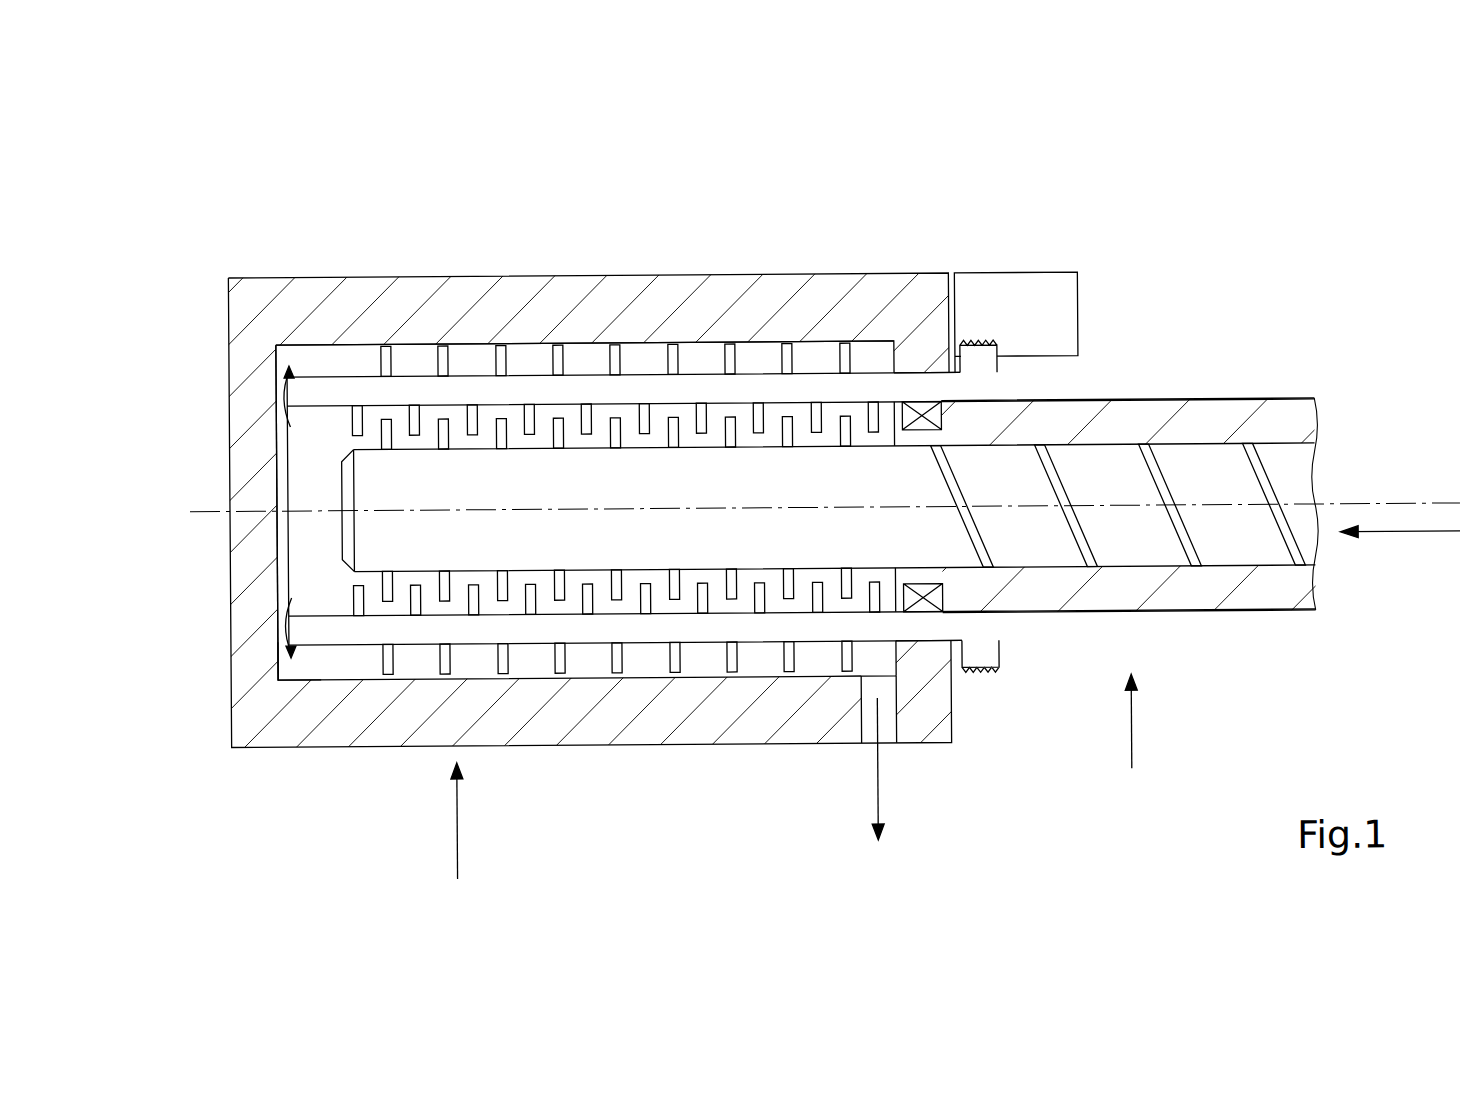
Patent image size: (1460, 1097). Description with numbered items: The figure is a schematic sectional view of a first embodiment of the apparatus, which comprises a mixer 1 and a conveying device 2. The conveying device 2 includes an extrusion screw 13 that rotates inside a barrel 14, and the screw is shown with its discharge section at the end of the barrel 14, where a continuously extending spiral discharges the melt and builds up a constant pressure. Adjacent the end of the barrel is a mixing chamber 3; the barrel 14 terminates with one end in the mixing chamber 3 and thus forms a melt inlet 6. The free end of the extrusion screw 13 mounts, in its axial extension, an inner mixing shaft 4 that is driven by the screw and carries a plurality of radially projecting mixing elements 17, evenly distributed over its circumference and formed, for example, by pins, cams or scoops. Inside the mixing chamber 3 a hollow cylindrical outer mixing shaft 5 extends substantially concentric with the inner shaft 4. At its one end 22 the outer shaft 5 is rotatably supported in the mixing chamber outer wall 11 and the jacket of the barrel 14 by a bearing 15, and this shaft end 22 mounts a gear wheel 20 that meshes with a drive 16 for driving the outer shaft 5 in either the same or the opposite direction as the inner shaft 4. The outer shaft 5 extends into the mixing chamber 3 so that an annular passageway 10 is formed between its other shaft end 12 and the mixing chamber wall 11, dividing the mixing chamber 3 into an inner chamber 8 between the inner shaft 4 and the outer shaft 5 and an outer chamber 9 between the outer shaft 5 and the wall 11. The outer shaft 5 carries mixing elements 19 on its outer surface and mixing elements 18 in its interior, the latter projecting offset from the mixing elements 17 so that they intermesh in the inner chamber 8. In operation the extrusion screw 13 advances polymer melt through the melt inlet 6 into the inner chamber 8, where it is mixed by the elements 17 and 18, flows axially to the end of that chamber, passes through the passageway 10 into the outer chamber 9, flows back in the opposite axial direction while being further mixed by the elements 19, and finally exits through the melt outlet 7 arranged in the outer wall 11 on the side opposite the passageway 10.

The mixer 1 is at (457, 843).
The conveying device 2 is at (1290, 672).
The mixing chamber 3 is at (365, 662).
The inner mixing shaft 4 is at (625, 530).
The outer mixing shaft 5 is at (545, 625).
The melt inlet 6 is at (893, 443).
The melt outlet 7 is at (884, 720).
The inner chamber 8 is at (713, 410).
The outer chamber 9 is at (518, 347).
The annular passageway 10 is at (283, 632).
The mixing chamber outer wall 11 is at (327, 340).
The shaft end 12 is at (278, 652).
The extrusion screw 13 is at (1292, 473).
The barrel 14 is at (1250, 593).
The bearing 15 is at (930, 402).
The drive 16 is at (992, 313).
The mixing elements 17 is at (498, 437).
The mixing elements 18 is at (645, 420).
The mixing elements 19 is at (790, 347).
The gear wheel 20 is at (980, 388).
The shaft end 22 is at (910, 387).